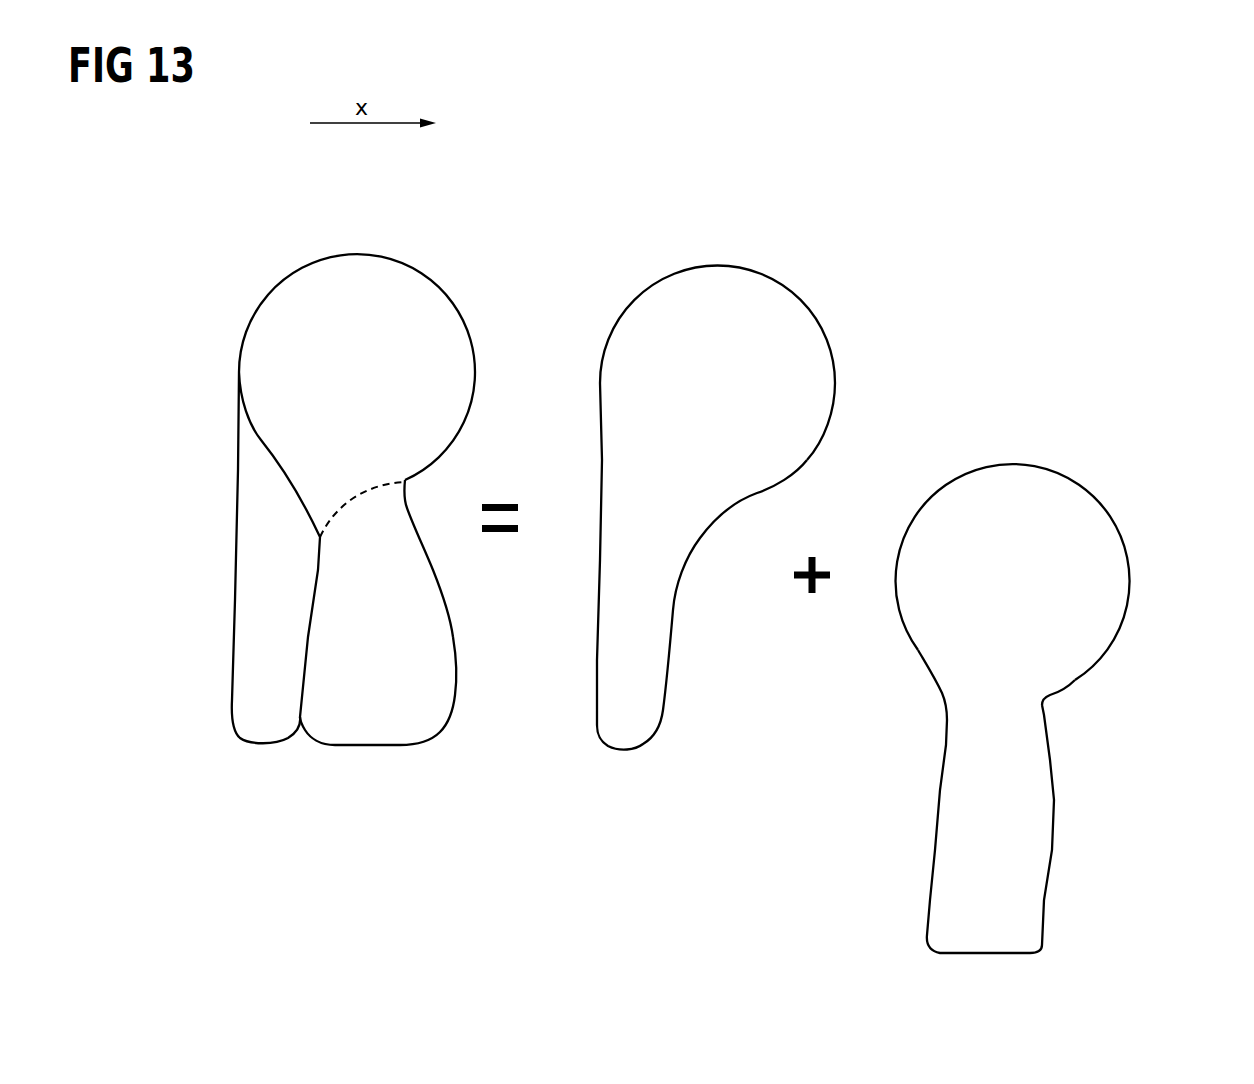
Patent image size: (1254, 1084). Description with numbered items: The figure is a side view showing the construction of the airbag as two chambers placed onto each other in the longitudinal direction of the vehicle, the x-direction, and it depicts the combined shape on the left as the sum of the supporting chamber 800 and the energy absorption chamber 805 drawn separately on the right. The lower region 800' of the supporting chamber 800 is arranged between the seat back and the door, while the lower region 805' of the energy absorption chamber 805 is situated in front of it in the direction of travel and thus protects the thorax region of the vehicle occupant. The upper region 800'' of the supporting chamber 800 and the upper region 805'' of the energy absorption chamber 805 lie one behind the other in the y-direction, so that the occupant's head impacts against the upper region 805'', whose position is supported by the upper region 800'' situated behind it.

The supporting chamber 800 is at (490, 370).
The lower region of the supporting chamber 800' is at (409, 598).
The upper region of the supporting chamber 800'' is at (797, 429).
The energy absorption chamber 805 is at (819, 600).
The lower region of the energy absorption chamber 805' is at (733, 795).
The upper region of the energy absorption chamber 805'' is at (729, 467).